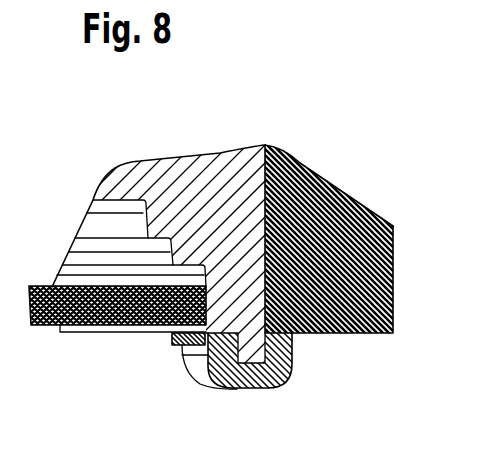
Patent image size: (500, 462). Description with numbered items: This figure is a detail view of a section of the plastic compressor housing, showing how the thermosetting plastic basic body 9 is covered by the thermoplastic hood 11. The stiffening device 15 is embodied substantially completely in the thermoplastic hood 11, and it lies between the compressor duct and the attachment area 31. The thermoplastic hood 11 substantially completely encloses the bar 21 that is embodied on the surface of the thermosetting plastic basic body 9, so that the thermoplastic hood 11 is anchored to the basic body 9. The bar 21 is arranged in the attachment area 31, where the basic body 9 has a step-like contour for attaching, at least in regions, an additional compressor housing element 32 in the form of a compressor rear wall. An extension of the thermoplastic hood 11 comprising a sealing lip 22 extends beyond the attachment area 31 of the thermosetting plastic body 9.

The basic body 9 is at (225, 183).
The thermoplastic hood 11 is at (368, 334).
The stiffening device 15 is at (354, 222).
The bar 21 is at (278, 388).
The sealing lip 22 is at (172, 348).
The attachment area 31 is at (137, 318).
The additional compressor housing element 32 is at (42, 327).